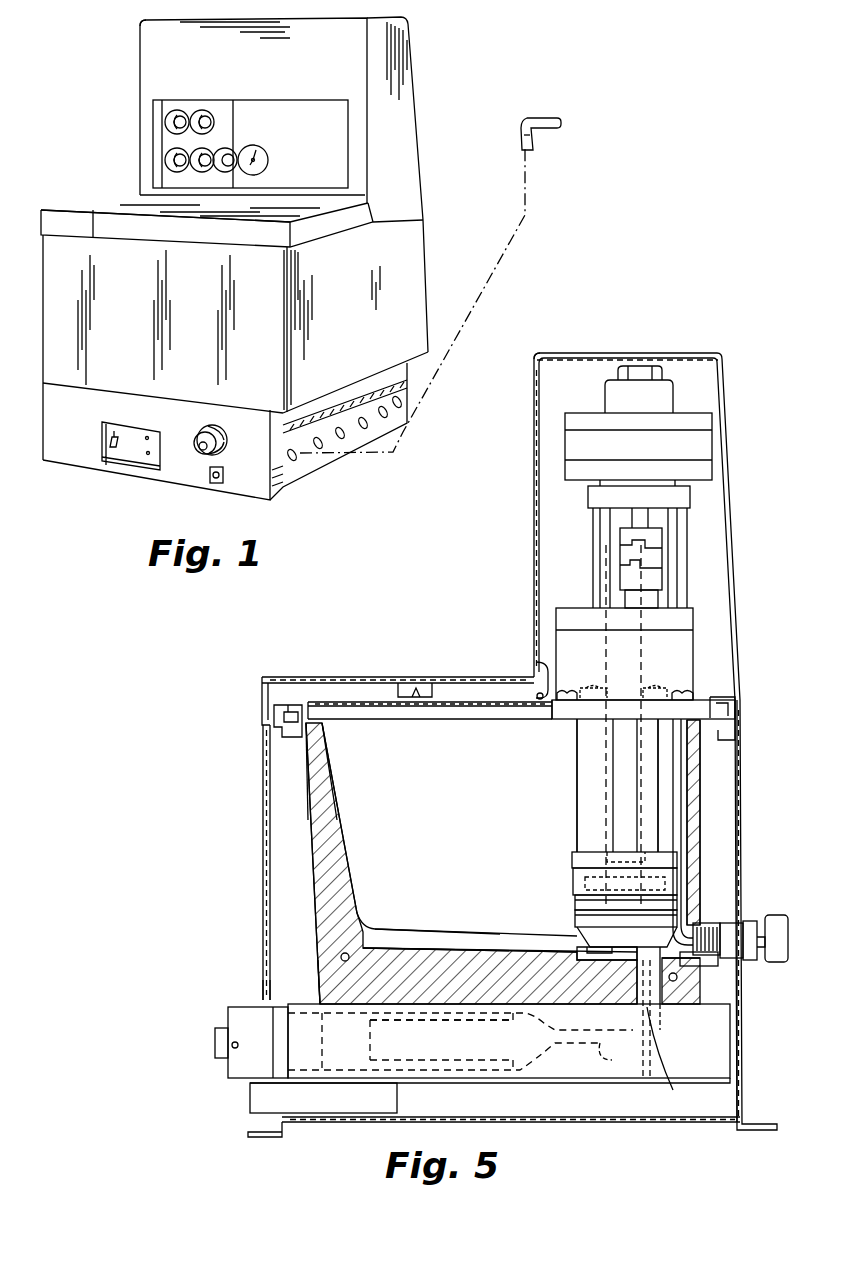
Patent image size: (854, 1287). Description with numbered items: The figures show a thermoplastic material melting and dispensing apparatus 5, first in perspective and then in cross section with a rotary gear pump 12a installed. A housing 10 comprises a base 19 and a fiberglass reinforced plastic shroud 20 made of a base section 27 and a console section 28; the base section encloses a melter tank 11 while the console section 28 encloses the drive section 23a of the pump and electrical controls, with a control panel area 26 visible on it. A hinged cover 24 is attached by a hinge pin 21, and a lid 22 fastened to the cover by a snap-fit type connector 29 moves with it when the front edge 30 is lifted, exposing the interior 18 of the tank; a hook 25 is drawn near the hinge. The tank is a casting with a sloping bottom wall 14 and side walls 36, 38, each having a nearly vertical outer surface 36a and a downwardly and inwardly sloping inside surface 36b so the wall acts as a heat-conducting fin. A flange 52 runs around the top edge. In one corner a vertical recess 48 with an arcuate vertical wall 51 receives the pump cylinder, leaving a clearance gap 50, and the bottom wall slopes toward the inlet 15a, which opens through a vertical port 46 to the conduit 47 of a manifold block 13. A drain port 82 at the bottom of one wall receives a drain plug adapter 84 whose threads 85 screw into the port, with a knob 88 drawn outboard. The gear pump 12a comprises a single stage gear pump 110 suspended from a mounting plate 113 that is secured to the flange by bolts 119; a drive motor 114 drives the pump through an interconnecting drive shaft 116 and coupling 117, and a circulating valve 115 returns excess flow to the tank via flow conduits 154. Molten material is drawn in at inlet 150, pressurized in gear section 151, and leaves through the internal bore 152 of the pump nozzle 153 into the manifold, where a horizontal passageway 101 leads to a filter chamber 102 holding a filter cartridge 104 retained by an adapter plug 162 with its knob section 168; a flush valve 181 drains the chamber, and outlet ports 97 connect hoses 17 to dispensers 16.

In FIG. 1, the thermoplastic material melting and dispensing apparatus 5 is at (500, 57).
In FIG. 5, the thermoplastic material melting and dispensing apparatus 5 is at (185, 708).
In FIG. 1, the housing 10 is at (410, 248).
In FIG. 5, the housing 10 is at (262, 815).
In FIG. 5, the melter tank 11 is at (307, 907).
In FIG. 5, the rotary gear pump 12a is at (538, 835).
In FIG. 5, the manifold block 13 is at (580, 1078).
In FIG. 5, the sloping bottom wall 14 is at (452, 953).
In FIG. 5, the inlet 15a is at (587, 955).
In FIG. 1, the dispenser 16 is at (547, 108).
In FIG. 1, the hose 17 is at (540, 210).
In FIG. 5, the interior of the tank 18 is at (478, 794).
In FIG. 1, the base 19 is at (175, 487).
In FIG. 5, the base 19 is at (614, 1122).
In FIG. 1, the shroud 20 is at (435, 213).
In FIG. 5, the shroud 20 is at (750, 697).
In FIG. 5, the hinge pin 21 is at (533, 658).
In FIG. 5, the lid 22 is at (470, 710).
In FIG. 5, the drive section 23a is at (695, 395).
In FIG. 1, the hinged cover 24 is at (128, 205).
In FIG. 5, the hinged cover 24 is at (327, 677).
In FIG. 5, the hook 25 is at (530, 655).
In FIG. 1, the control panel housing 26 is at (270, 87).
In FIG. 5, the control panel housing 26 is at (535, 550).
In FIG. 1, the base section 27 is at (410, 300).
In FIG. 5, the base section 27 is at (742, 800).
In FIG. 1, the console section 28 is at (403, 153).
In FIG. 5, the console section 28 is at (735, 596).
In FIG. 5, the snap-fit type connector 29 is at (447, 650).
In FIG. 1, the front edge 30 is at (108, 227).
In FIG. 5, the front edge 30 is at (262, 692).
In FIG. 5, the side wall 36 is at (328, 822).
In FIG. 5, the outer surface 36a is at (310, 840).
In FIG. 5, the inside surface 36b is at (340, 847).
In FIG. 5, the side wall 38 is at (690, 760).
In FIG. 5, the vertical port 46 is at (673, 998).
In FIG. 5, the conduit 47 is at (647, 1027).
In FIG. 5, the vertical recess 48 is at (700, 845).
In FIG. 5, the clearance gap 50 is at (681, 877).
In FIG. 5, the arcuate vertical wall 51 is at (700, 817).
In FIG. 5, the flange 52 is at (290, 737).
In FIG. 5, the drain port 82 is at (683, 952).
In FIG. 5, the drain plug adapter 84 is at (747, 935).
In FIG. 5, the threads 85 is at (697, 925).
In FIG. 5, the knob 88 is at (777, 957).
In FIG. 1, the outlet ports 97 is at (293, 460).
In FIG. 5, the horizontal passageway 101 is at (600, 1058).
In FIG. 1, the filter chamber 102 is at (131, 446).
In FIG. 5, the filter chamber 102 is at (453, 1080).
In FIG. 1, the filter cartridge 104 is at (186, 440).
In FIG. 5, the filter cartridge 104 is at (515, 1080).
In FIG. 5, the single stage gear pump 110 is at (580, 887).
In FIG. 5, the mounting plate 113 is at (568, 712).
In FIG. 5, the drive motor 114 is at (703, 445).
In FIG. 5, the circulating valve 115 is at (640, 665).
In FIG. 5, the interconnecting drive shaft 116 is at (648, 600).
In FIG. 5, the coupling 117 is at (653, 562).
In FIG. 5, the bolts 119 is at (568, 688).
In FIG. 5, the inlet 150 is at (575, 910).
In FIG. 5, the gear section 151 is at (575, 897).
In FIG. 5, the internal bore 152 is at (648, 1065).
In FIG. 5, the pump nozzle 153 is at (675, 1058).
In FIG. 5, the flow conduits 154 is at (572, 868).
In FIG. 5, the adapter plug 162 is at (280, 1020).
In FIG. 5, the knob section 168 is at (240, 1058).
In FIG. 1, the flush valve 181 is at (217, 483).
In FIG. 5, the flush valve 181 is at (330, 1103).